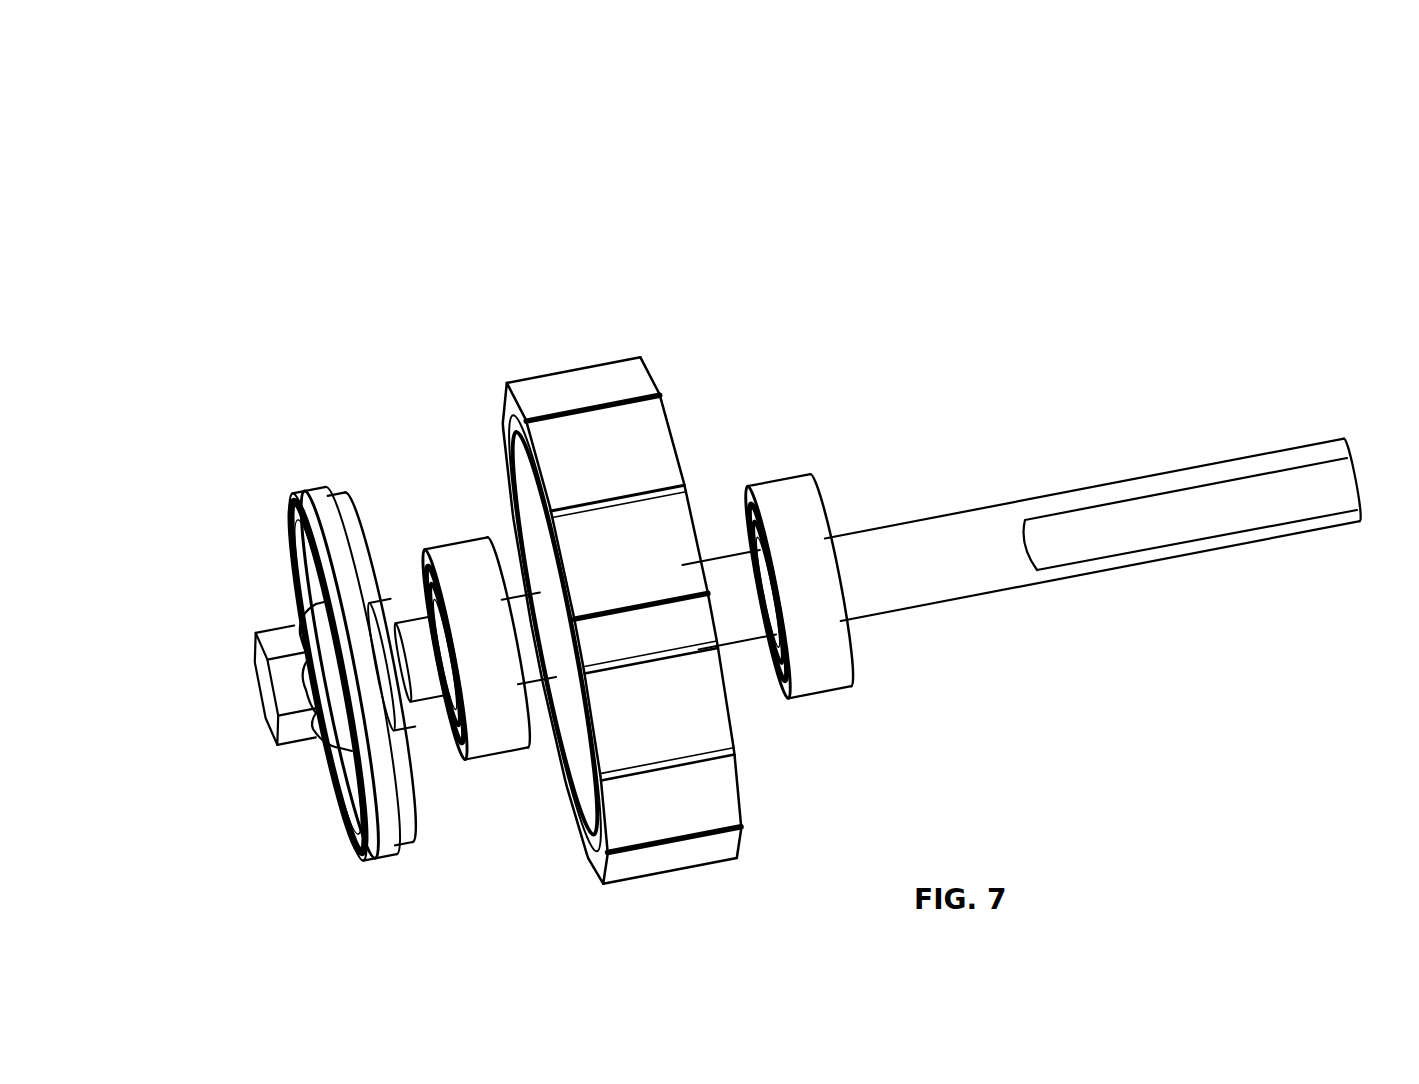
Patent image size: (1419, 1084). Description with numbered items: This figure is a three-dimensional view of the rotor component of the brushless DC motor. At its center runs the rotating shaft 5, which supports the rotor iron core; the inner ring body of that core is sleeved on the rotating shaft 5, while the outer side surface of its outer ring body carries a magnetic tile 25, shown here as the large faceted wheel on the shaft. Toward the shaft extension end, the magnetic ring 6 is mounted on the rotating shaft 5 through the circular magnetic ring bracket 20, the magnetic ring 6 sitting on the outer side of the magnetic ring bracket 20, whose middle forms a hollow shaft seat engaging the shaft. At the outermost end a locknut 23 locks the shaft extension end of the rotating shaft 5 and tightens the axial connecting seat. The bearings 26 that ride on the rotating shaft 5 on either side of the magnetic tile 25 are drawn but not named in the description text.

The rotating shaft 5 is at (883, 583).
The magnetic ring 6 is at (305, 482).
The magnetic ring bracket 20 is at (361, 500).
The locknut 23 is at (290, 657).
The magnetic tile 25 is at (608, 470).
The bearing 26 is at (472, 553).